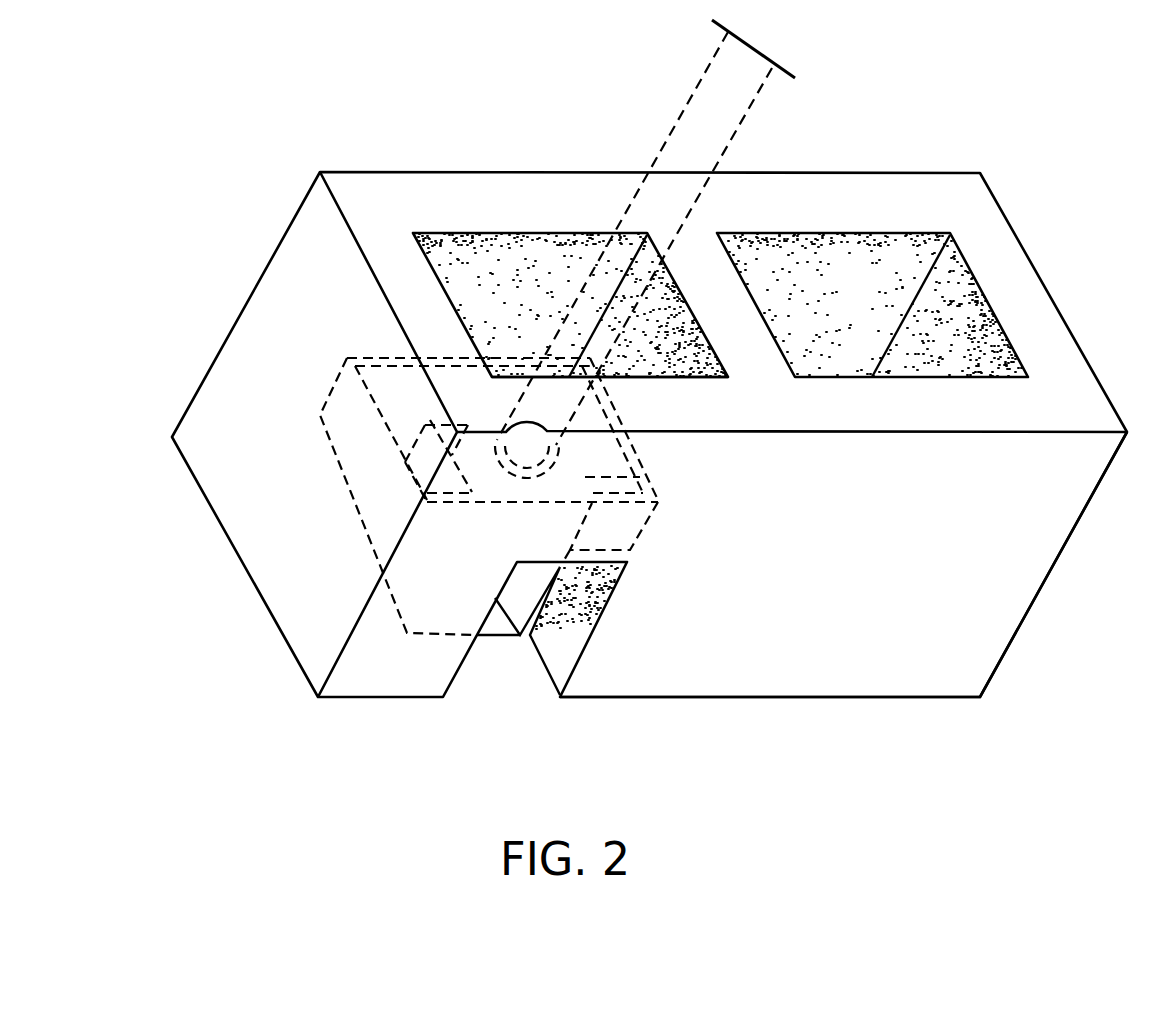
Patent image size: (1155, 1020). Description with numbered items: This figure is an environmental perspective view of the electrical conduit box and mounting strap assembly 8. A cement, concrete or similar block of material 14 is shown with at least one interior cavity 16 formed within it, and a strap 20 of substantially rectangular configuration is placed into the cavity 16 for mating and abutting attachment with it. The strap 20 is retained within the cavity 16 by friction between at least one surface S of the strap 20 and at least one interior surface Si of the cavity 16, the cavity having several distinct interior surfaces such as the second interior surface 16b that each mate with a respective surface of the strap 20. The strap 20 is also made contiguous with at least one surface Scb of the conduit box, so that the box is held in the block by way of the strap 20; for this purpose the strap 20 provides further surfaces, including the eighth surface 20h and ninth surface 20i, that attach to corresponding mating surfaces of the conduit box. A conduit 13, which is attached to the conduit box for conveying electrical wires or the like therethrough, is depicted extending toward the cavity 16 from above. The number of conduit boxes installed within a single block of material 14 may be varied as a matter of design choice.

The electrical conduit box and mounting strap assembly 8 is at (352, 130).
The conduit 13 is at (692, 100).
The block of material 14 is at (968, 655).
The interior cavity 16 is at (486, 280).
The second interior surface 16b is at (468, 327).
The interior surface of the cavity Si is at (507, 265).
The surface of the strap S is at (340, 405).
The surface of the conduit box Scb is at (407, 580).
The strap 20 is at (520, 363).
The eighth surface of the strap 20h is at (557, 432).
The ninth surface of the strap 20i is at (640, 475).